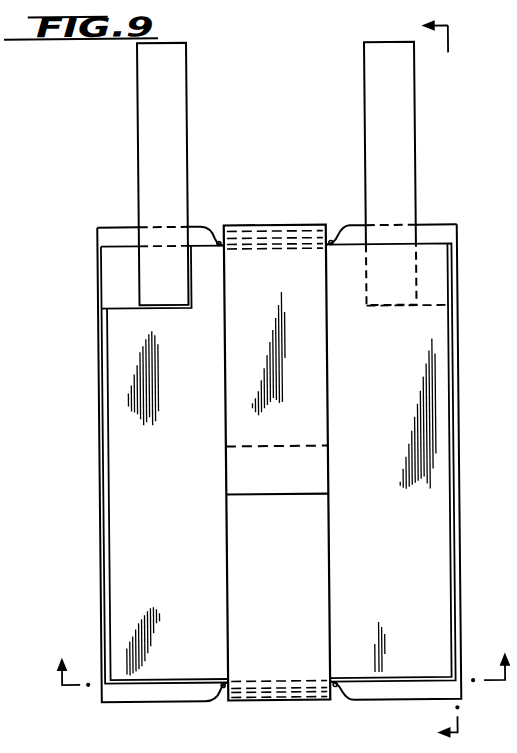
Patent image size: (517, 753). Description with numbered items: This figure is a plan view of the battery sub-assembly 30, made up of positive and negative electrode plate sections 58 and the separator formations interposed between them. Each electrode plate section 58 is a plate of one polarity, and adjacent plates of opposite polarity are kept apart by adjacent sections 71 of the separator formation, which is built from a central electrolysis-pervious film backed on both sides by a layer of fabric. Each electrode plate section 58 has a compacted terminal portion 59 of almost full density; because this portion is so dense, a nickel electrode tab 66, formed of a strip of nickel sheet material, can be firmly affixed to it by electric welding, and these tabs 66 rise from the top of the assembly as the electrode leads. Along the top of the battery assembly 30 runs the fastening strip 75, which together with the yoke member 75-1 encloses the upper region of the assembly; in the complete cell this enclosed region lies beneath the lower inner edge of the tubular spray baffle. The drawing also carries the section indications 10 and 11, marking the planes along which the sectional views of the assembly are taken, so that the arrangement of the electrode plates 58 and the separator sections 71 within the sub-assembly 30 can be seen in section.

The battery sub-assembly 30 is at (86, 351).
The electrode plate section 58 is at (138, 464).
The compacted terminal portion 59 is at (114, 273).
The electrode tab 66 is at (183, 161).
The separator formation section 71 is at (102, 497).
The fastening strip 75 is at (315, 407).
The yoke member 75-1 is at (340, 218).
The section line 10- 10 is at (431, 378).
The section line 11- 11 is at (283, 659).